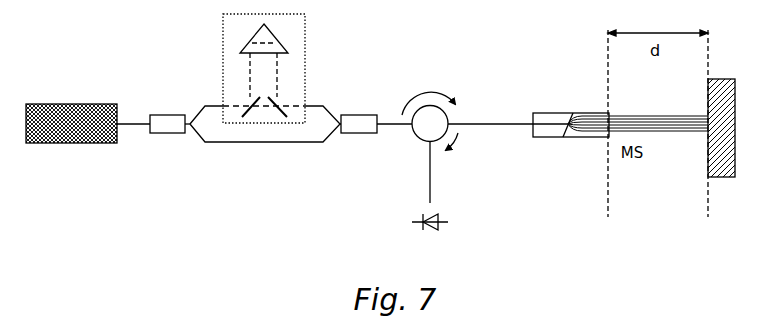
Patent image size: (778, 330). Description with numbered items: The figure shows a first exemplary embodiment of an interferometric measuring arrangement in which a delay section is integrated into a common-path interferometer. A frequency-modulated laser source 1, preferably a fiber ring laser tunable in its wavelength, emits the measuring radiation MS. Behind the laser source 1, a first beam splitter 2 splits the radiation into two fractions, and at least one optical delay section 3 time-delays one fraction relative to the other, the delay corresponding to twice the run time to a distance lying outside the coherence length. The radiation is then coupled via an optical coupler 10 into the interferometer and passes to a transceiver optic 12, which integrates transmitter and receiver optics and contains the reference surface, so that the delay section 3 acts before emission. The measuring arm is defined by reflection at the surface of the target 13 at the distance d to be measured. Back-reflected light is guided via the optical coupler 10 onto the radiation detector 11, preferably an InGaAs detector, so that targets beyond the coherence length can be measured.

The frequency-modulated laser source 1 is at (50, 122).
The first beam splitter 2 is at (170, 123).
The optical delay section 3 is at (223, 55).
The optical coupler 10 is at (427, 121).
The radiation detector 11 is at (440, 212).
The transceiver optic 12 is at (552, 113).
The surface of the target 13 is at (725, 175).